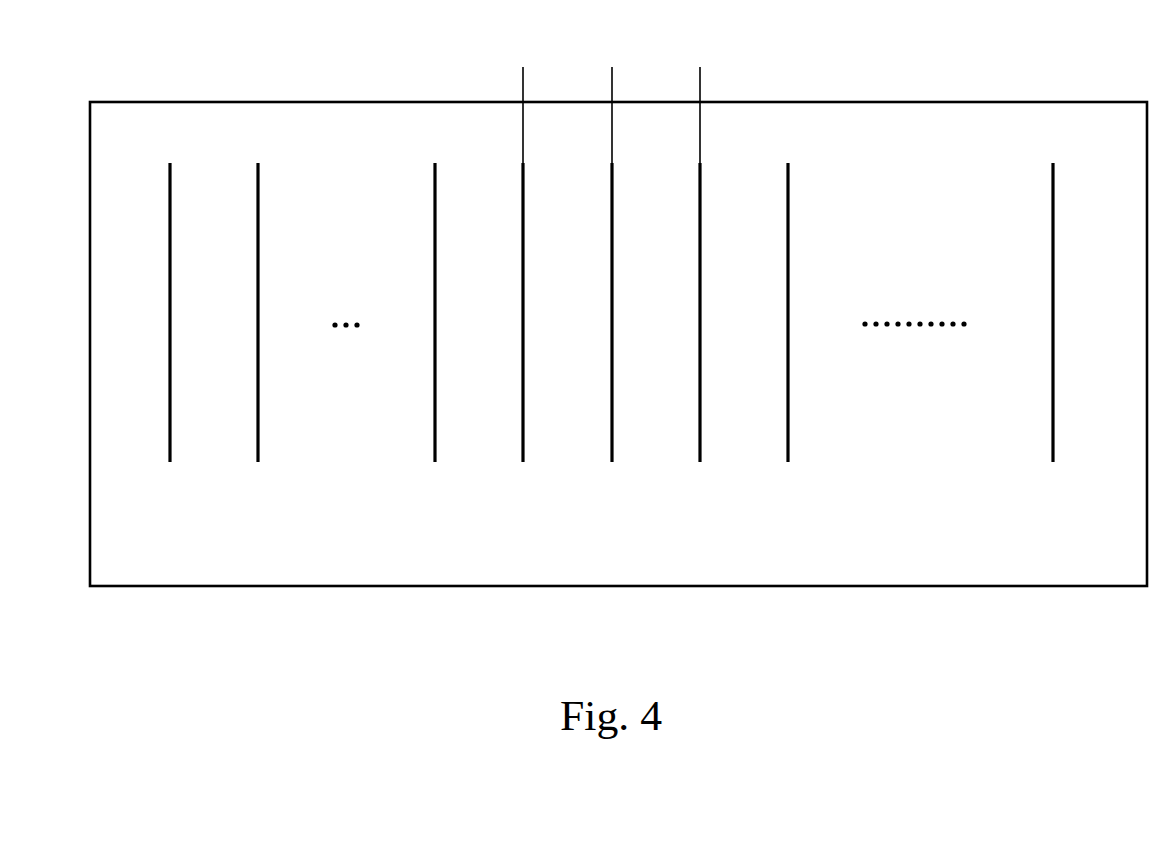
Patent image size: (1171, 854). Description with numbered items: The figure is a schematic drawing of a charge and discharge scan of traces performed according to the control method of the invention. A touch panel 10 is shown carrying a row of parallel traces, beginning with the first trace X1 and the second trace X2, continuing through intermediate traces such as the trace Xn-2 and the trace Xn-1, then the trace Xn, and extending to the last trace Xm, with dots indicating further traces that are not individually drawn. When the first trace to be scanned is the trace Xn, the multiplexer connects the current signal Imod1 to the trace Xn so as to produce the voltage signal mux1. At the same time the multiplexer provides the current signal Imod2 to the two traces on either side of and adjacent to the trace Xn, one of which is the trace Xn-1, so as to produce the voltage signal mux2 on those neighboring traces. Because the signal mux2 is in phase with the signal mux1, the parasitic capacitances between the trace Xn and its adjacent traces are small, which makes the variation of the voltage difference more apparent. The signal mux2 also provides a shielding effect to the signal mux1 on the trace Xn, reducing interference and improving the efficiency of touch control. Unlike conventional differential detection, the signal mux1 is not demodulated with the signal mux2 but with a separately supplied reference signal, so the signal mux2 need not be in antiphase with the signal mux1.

The touch panel 10 is at (938, 101).
The first trace X1 is at (171, 331).
The second trace X2 is at (259, 331).
The trace Xn-2 is at (437, 331).
The trace Xn-1 is at (524, 331).
The trace Xn is at (613, 331).
The last trace Xm is at (1054, 331).
The voltage signal mux1 is at (610, 96).
The voltage signal mux2 is at (612, 96).